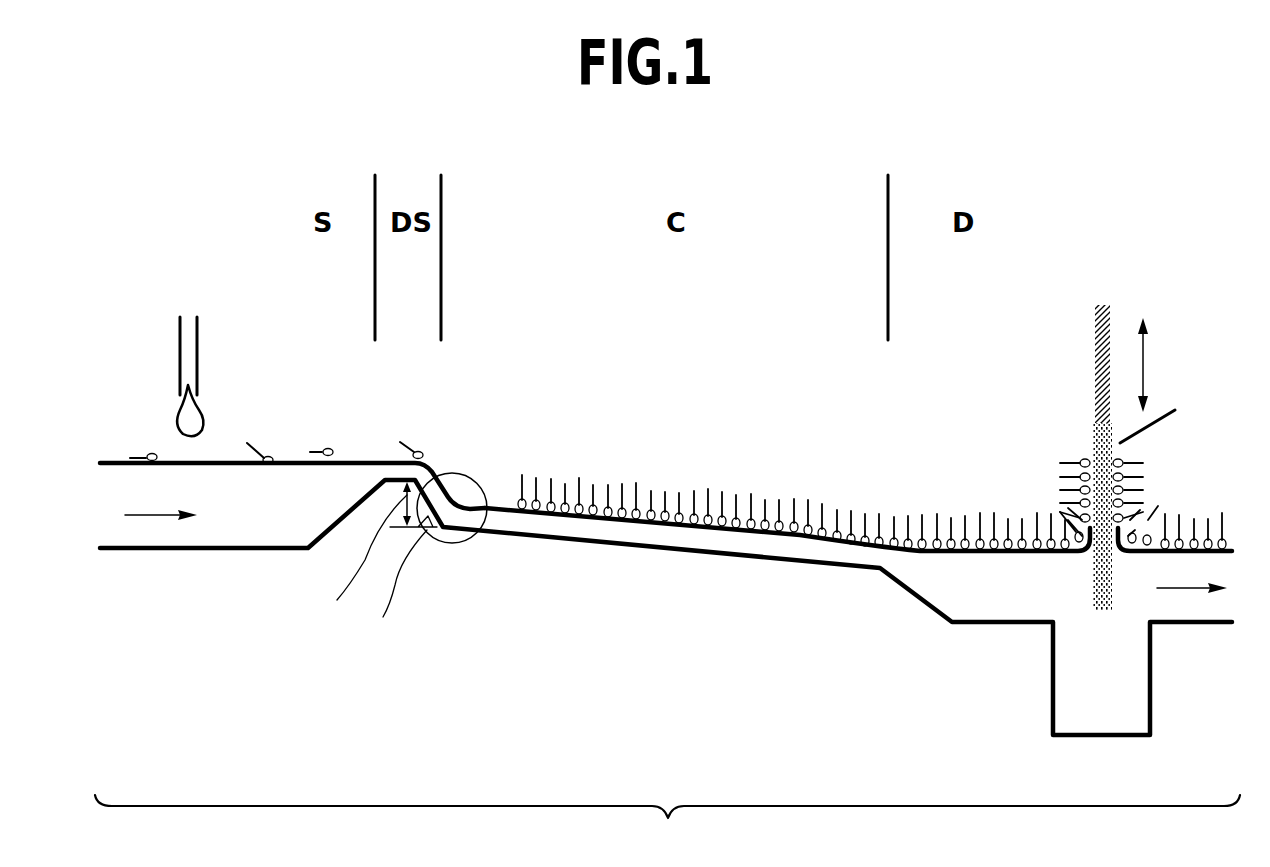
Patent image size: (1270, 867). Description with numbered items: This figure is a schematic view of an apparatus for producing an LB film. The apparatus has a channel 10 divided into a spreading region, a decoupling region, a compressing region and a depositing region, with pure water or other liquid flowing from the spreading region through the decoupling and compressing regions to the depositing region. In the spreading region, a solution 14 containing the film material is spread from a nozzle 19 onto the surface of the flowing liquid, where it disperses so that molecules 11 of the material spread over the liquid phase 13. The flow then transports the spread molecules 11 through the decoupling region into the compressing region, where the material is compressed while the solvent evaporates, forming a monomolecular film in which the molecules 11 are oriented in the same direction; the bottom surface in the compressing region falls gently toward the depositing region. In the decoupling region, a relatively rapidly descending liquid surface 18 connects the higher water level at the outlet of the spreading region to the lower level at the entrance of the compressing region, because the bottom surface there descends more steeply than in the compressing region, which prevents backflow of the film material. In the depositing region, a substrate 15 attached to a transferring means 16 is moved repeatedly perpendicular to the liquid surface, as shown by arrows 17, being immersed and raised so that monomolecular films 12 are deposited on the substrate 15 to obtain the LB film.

The channel 10 is at (667, 831).
The molecules 11 is at (268, 455).
The monomolecular films 12 is at (515, 478).
The liquid phase 13 is at (273, 537).
The solution 14 is at (178, 418).
The substrate 15 is at (1095, 435).
The transferring means 16 is at (1095, 358).
The arrows 17 is at (1143, 353).
The descending liquid surface in the decoupling region 18 is at (457, 547).
The nozzle 19 is at (197, 352).